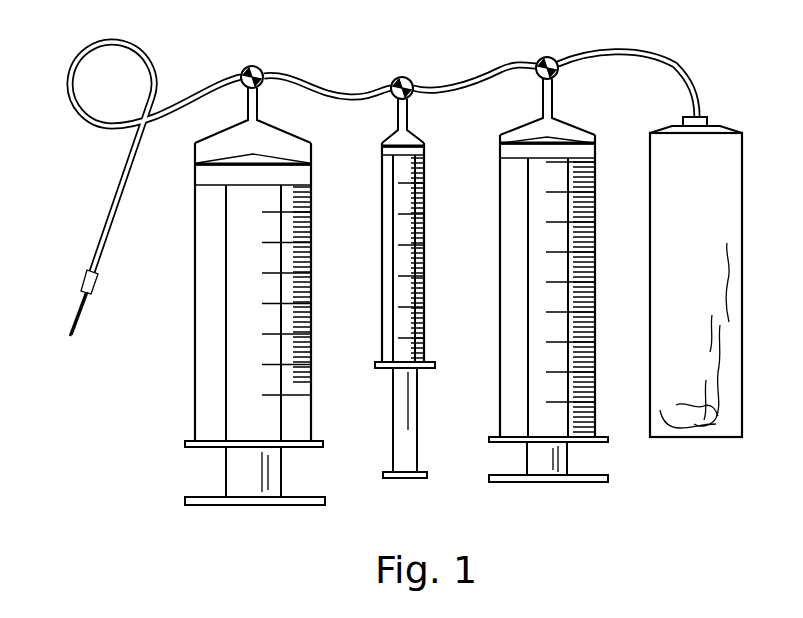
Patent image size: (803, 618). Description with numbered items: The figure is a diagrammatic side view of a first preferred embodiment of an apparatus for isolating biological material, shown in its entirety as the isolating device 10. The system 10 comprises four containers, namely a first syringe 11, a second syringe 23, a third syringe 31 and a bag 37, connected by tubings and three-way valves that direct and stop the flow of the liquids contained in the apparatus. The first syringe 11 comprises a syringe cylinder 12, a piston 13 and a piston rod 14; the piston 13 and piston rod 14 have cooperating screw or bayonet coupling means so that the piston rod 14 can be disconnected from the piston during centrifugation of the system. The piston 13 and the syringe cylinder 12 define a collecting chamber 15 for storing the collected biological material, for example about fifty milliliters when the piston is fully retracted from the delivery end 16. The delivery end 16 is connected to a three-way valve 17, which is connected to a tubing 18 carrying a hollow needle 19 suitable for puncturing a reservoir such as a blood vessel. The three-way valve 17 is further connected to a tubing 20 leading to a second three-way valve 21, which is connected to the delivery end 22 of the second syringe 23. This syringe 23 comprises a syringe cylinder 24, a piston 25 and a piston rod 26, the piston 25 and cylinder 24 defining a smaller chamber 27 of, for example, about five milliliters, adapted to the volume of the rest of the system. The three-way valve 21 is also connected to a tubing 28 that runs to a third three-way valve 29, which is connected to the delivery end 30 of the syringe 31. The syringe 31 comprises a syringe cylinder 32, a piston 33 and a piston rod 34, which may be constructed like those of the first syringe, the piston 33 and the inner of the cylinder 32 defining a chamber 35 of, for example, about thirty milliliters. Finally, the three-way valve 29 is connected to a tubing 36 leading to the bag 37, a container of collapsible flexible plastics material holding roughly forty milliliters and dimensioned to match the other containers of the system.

The isolating device 10 is at (447, 80).
The first syringe 11 is at (272, 510).
The syringe cylinder 12 is at (200, 320).
The piston 13 is at (196, 192).
The piston rod 14 is at (232, 473).
The collecting chamber 15 is at (194, 168).
The delivery end 16 is at (257, 104).
The three-way valve 17 is at (243, 68).
The tubing 18 is at (112, 192).
The hollow needle 19 is at (78, 300).
The tubing 20 is at (338, 88).
The three-way valve 21 is at (405, 77).
The delivery end 22 is at (409, 112).
The second syringe 23 is at (412, 486).
The syringe cylinder 24 is at (383, 321).
The piston 25 is at (387, 162).
The piston rod 26 is at (396, 426).
The chamber 27 is at (394, 134).
The tubing 28 is at (484, 78).
The three-way valve 29 is at (547, 57).
The delivery end 30 is at (556, 93).
The syringe 31 is at (558, 488).
The syringe cylinder 32 is at (508, 320).
The piston 33 is at (506, 152).
The piston rod 34 is at (530, 457).
The chamber 35 is at (540, 122).
The tubing 36 is at (674, 63).
The bag 37 is at (712, 445).